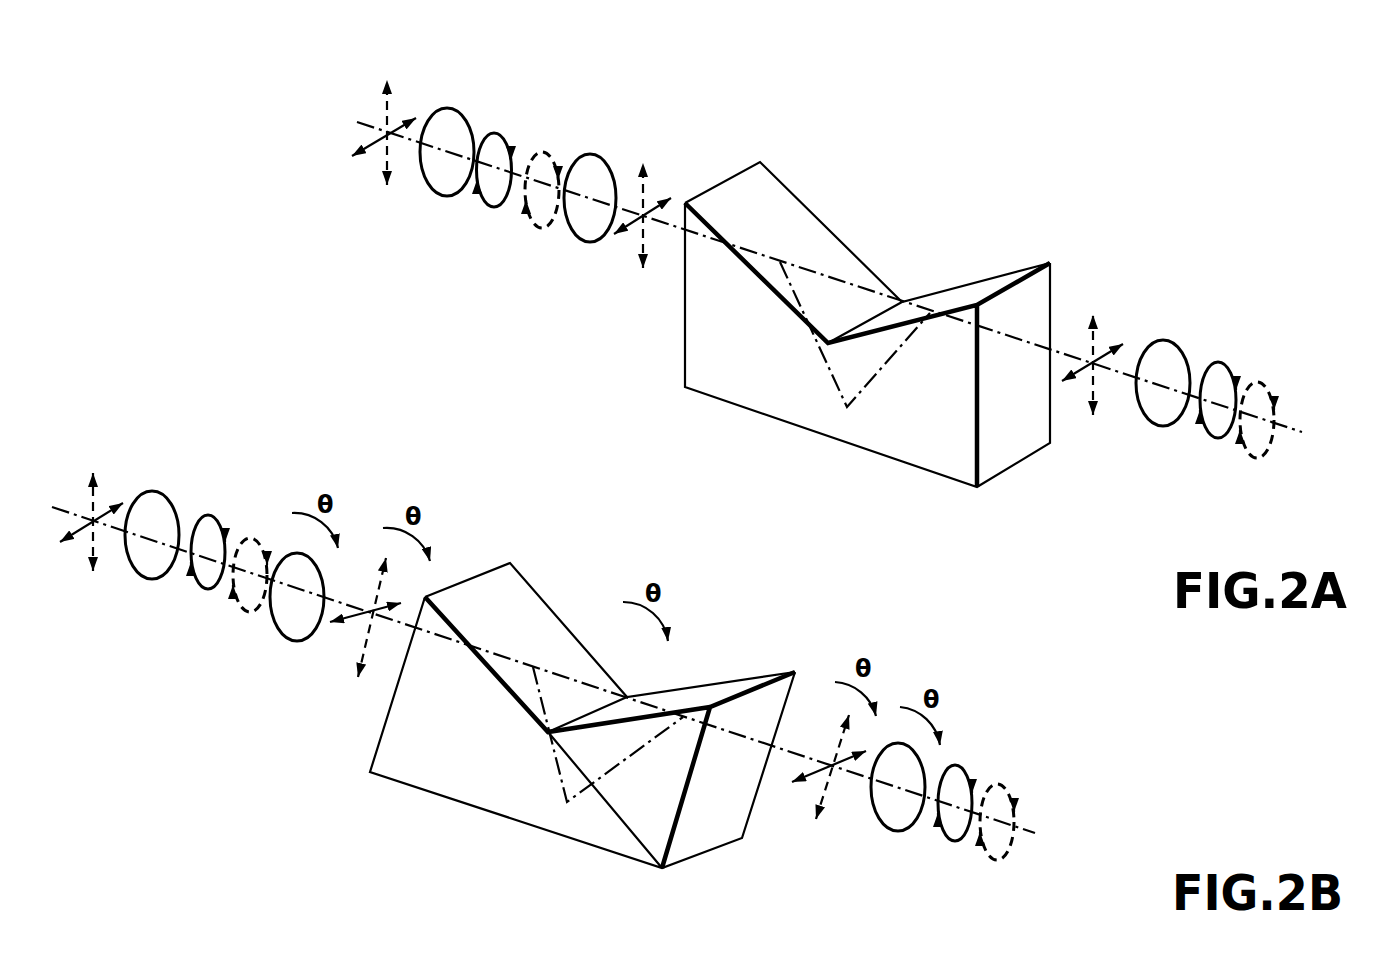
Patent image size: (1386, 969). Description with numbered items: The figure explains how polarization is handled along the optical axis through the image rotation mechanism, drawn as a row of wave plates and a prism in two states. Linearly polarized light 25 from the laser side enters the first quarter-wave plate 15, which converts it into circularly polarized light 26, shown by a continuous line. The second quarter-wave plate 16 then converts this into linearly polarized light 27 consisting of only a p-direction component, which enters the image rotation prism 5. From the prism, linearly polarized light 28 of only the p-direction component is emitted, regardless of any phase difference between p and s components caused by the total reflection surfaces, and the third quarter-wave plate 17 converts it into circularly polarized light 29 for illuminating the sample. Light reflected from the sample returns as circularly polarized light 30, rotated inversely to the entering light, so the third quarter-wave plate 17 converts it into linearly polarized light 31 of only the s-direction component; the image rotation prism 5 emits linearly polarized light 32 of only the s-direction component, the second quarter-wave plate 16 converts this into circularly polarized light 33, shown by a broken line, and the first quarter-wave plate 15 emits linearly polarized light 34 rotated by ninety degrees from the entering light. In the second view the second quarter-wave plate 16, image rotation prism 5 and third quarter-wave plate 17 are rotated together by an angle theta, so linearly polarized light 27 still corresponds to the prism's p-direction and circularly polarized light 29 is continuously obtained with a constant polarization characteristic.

In FIG. 2A, the image rotation prism 5 is at (693, 350).
In FIG. 2B, the image rotation prism 5 is at (473, 787).
In FIG. 2A, the first λ/4 plate 15 is at (437, 196).
In FIG. 2B, the first λ/4 plate 15 is at (148, 575).
In FIG. 2A, the second λ/4 plate 16 is at (578, 243).
In FIG. 2B, the second λ/4 plate 16 is at (292, 635).
In FIG. 2A, the third λ/4 plate 17 is at (1158, 428).
In FIG. 2B, the third λ/4 plate 17 is at (893, 833).
In FIG. 2A, the linearly polarized light 25 is at (405, 112).
In FIG. 2B, the linearly polarized light 25 is at (118, 493).
In FIG. 2A, the circularly polarized light 26 is at (503, 132).
In FIG. 2B, the circularly polarized light 26 is at (208, 587).
In FIG. 2A, the linearly polarized light 27 is at (667, 200).
In FIG. 2B, the linearly polarized light 27 is at (352, 622).
In FIG. 2A, the linearly polarized light 28 is at (1120, 340).
In FIG. 2B, the linearly polarized light 28 is at (813, 773).
In FIG. 2A, the circularly polarized light 29 is at (1225, 363).
In FIG. 2B, the circularly polarized light 29 is at (963, 772).
In FIG. 2A, the circularly polarized light 30 is at (1272, 393).
In FIG. 2B, the circularly polarized light 30 is at (1008, 787).
In FIG. 2A, the linearly polarized light 31 is at (1093, 343).
In FIG. 2B, the linearly polarized light 31 is at (840, 740).
In FIG. 2A, the linearly polarized light 32 is at (643, 160).
In FIG. 2B, the linearly polarized light 32 is at (357, 680).
In FIG. 2A, the circularly polarized light 33 is at (548, 147).
In FIG. 2B, the circularly polarized light 33 is at (253, 537).
In FIG. 2A, the linearly polarized light 34 is at (384, 118).
In FIG. 2B, the linearly polarized light 34 is at (90, 543).